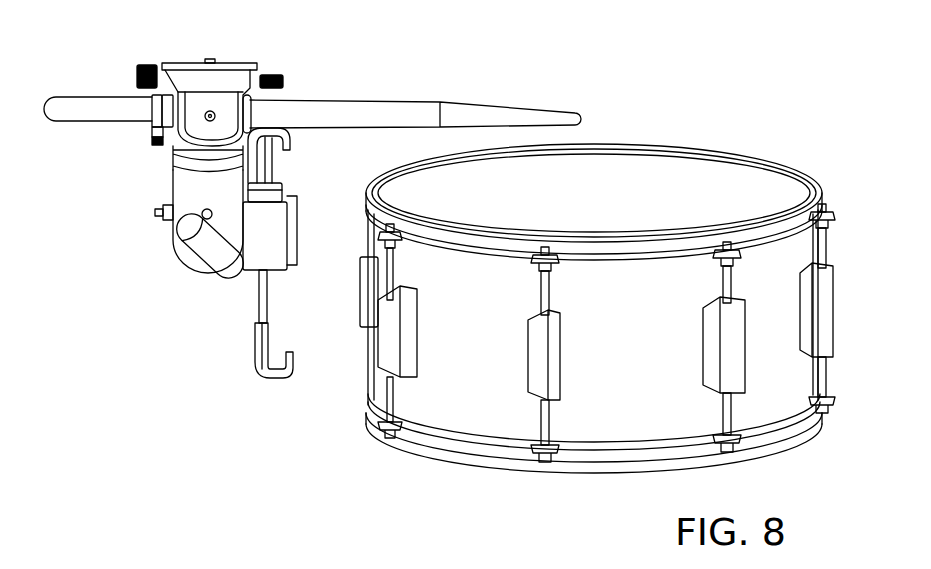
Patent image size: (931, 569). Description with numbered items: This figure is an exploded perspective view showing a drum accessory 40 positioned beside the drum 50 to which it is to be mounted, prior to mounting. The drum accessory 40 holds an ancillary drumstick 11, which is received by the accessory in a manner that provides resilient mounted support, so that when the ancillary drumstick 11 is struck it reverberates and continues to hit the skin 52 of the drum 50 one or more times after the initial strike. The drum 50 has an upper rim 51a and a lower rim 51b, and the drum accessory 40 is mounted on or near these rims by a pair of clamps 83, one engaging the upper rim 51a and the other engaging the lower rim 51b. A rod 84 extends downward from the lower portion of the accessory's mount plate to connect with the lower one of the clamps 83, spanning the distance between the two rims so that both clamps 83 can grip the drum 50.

The ancillary drumstick 11 is at (456, 118).
The drum accessory 40 is at (215, 218).
The drum 50 is at (499, 308).
The upper rim 51a is at (702, 141).
The lower rim 51b is at (627, 478).
The skin 52 is at (609, 203).
The clamps 83 is at (275, 165).
The rod 84 is at (268, 299).